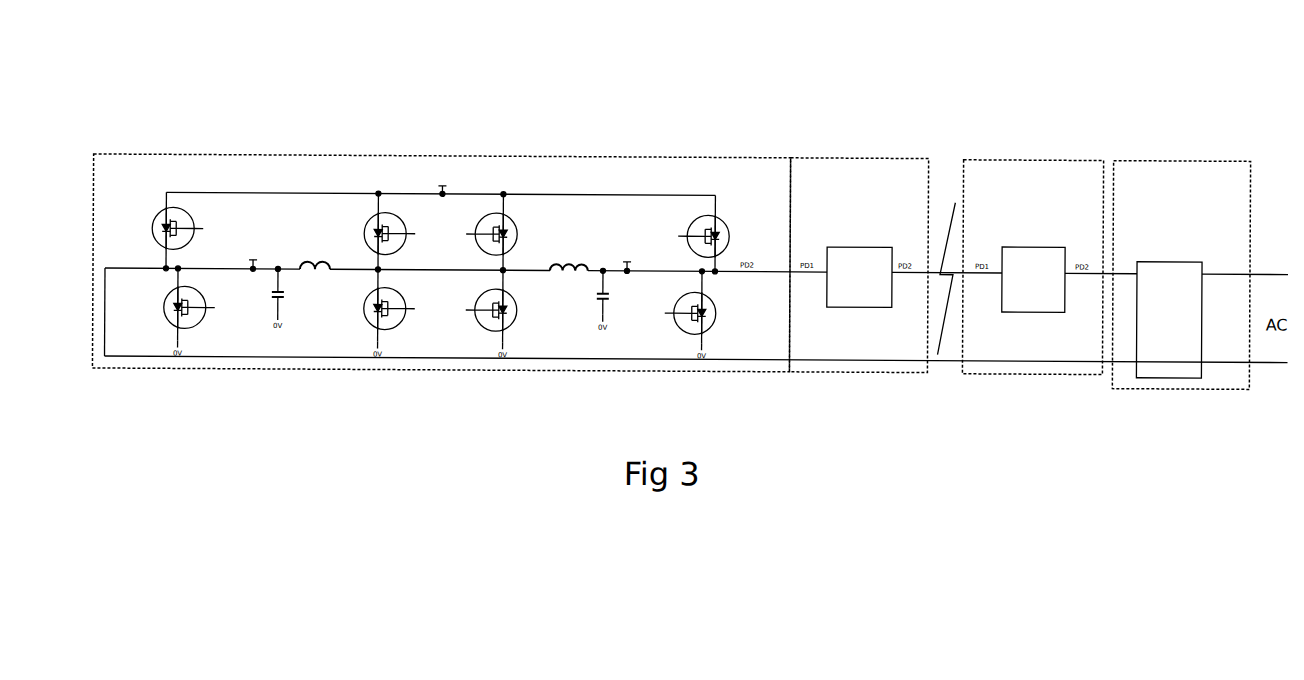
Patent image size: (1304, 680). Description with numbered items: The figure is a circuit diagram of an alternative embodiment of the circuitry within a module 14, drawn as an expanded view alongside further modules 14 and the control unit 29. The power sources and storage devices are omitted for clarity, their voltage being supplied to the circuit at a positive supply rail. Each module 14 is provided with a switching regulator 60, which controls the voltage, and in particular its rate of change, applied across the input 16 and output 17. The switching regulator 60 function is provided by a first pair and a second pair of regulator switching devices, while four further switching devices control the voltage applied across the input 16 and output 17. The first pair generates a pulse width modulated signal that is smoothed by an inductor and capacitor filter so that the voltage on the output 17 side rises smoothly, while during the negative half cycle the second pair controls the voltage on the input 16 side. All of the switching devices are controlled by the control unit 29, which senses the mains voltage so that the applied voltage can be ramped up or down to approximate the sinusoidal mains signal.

The module 14 is at (673, 153).
The input 16 is at (110, 260).
The output 17 is at (783, 267).
The control unit 29 is at (1187, 297).
The switching regulator 60 is at (400, 173).